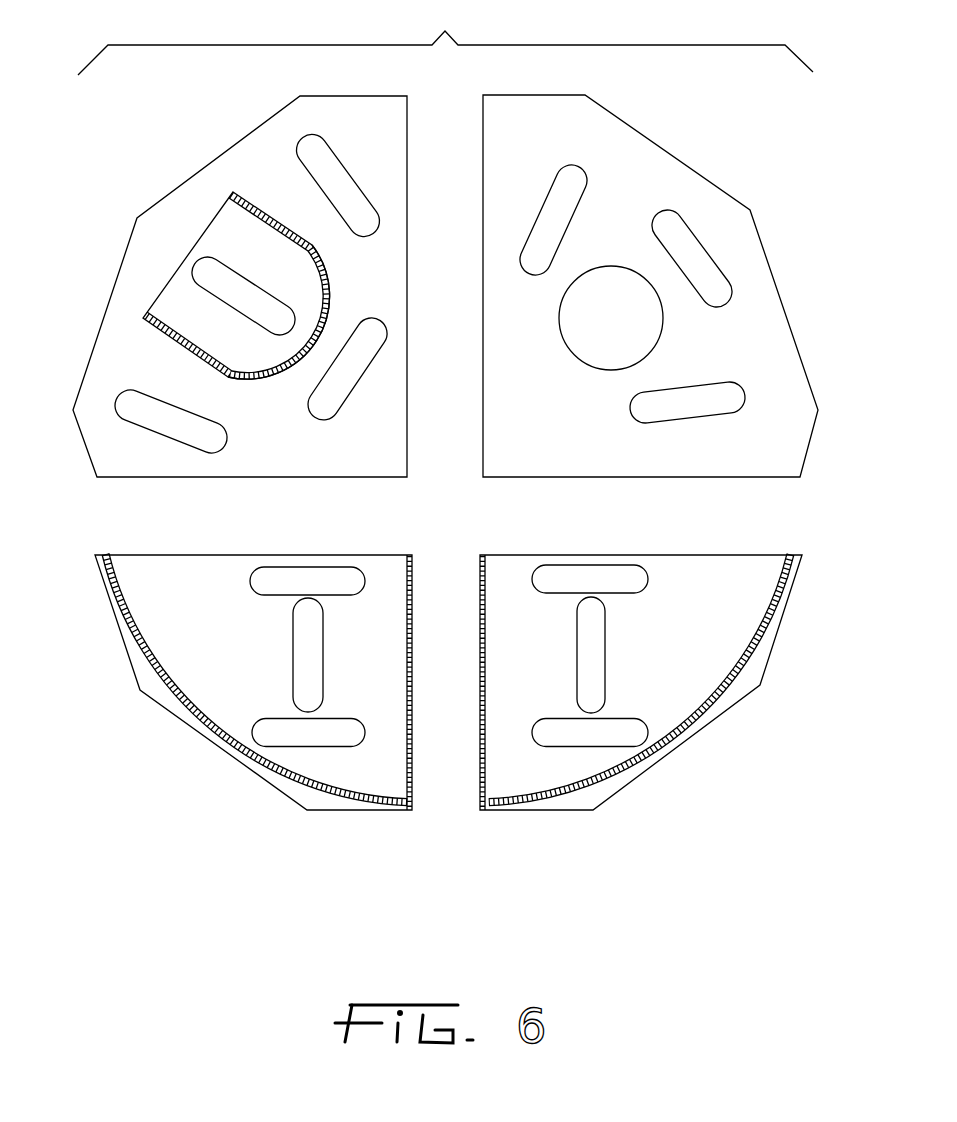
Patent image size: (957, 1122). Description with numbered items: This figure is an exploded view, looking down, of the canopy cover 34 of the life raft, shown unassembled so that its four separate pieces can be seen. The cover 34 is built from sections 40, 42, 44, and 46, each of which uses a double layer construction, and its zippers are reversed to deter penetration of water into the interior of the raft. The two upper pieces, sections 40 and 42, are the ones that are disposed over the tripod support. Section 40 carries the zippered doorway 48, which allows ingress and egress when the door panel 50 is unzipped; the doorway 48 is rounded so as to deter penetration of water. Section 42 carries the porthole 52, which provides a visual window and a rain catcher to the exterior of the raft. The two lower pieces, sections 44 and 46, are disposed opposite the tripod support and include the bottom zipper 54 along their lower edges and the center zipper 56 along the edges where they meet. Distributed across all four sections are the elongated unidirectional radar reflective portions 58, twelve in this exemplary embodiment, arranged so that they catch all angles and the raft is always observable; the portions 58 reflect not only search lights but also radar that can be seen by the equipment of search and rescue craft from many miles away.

The canopy cover 34 is at (451, 458).
The section 40 is at (115, 363).
The section 42 is at (773, 340).
The section 44 is at (747, 567).
The section 46 is at (157, 573).
The zippered doorway 48 is at (257, 218).
The door panel 50 is at (302, 251).
The porthole 52 is at (650, 278).
The bottom zipper 54 is at (500, 810).
The center zipper 56 is at (480, 573).
The radar reflective portions 58 is at (287, 320).